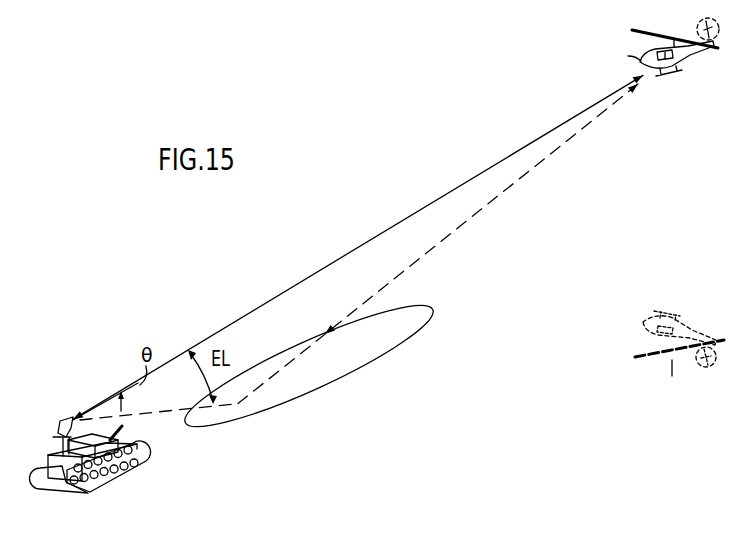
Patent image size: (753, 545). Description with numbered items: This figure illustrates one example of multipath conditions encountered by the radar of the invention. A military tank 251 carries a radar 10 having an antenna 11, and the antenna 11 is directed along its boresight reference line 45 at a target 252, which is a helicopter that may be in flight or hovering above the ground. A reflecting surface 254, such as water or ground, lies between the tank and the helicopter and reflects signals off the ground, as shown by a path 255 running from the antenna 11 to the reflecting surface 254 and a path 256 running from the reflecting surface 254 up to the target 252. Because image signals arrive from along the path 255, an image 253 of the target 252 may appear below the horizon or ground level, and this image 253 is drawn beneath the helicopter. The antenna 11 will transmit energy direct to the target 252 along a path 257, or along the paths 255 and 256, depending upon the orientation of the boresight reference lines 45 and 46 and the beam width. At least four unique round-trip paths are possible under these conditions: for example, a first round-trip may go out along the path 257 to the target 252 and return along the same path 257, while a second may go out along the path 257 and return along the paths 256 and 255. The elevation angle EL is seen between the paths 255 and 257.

The radar 10 is at (57, 448).
The antenna 11 is at (58, 418).
The boresight reference line 45 is at (125, 393).
The boresight reference line 46 is at (118, 388).
The military tank 251 is at (84, 458).
The target 252 is at (683, 65).
The image 253 is at (684, 323).
The reflecting surface 254 is at (402, 337).
The path 255 is at (163, 411).
The path 256 is at (478, 212).
The path 257 is at (457, 187).